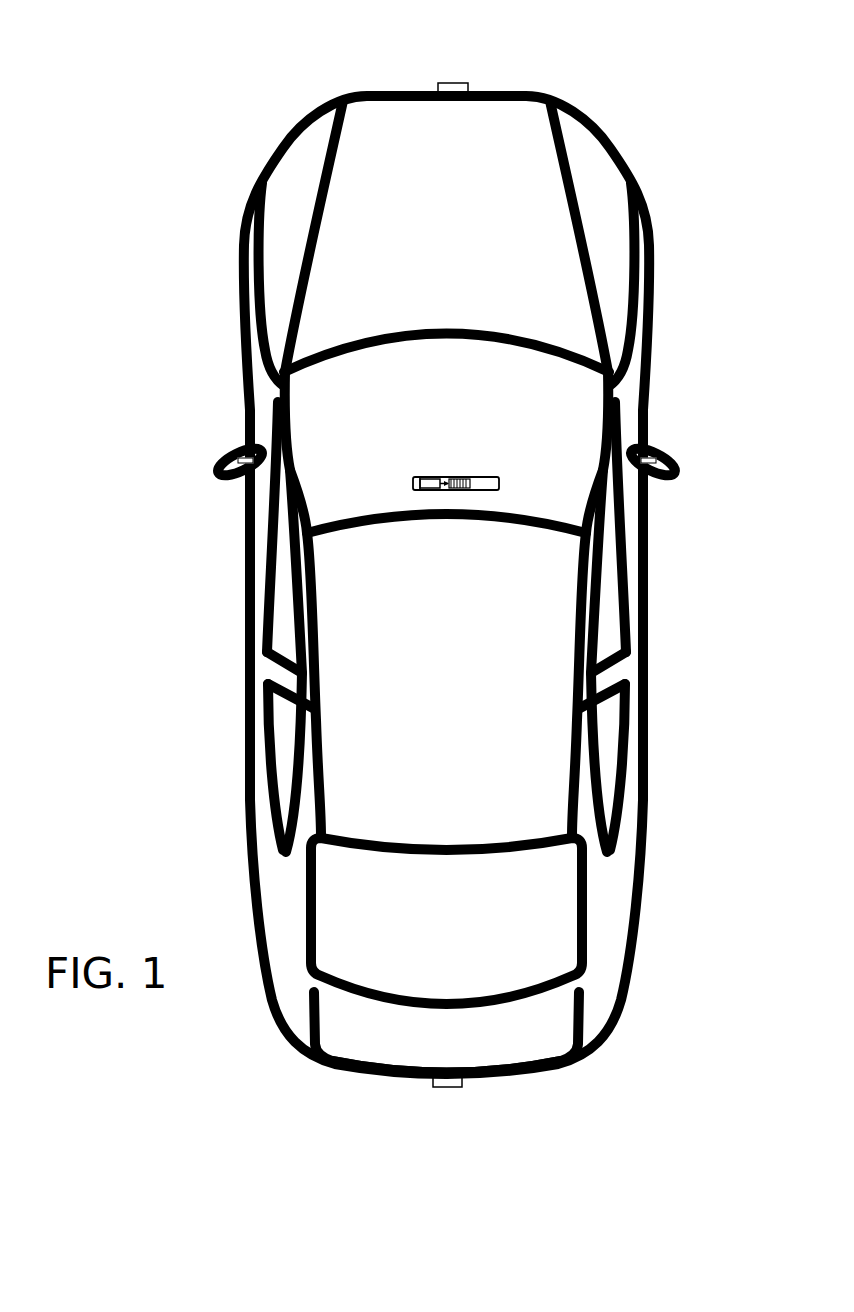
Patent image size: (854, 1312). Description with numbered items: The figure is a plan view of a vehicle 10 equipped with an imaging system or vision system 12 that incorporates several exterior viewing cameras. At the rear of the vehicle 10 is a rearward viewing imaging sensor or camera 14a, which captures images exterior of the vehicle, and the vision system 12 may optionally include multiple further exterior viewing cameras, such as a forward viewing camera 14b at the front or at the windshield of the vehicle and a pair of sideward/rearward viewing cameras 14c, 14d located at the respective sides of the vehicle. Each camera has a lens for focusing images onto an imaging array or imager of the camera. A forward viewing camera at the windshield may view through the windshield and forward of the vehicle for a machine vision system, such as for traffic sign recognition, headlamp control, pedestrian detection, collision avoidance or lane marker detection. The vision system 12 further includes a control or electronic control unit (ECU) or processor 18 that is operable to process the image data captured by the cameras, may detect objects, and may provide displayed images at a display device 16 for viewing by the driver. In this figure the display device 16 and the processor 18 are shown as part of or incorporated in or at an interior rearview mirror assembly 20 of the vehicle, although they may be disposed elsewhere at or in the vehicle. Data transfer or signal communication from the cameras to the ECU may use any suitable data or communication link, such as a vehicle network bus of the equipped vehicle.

The vehicle 10 is at (192, 183).
The vision system 12 is at (390, 1112).
The rearward viewing camera 14a is at (450, 1083).
The forward viewing camera 14b is at (456, 83).
The sideward/rearward viewing camera 14c is at (236, 455).
The sideward/rearward viewing camera 14d is at (655, 457).
The display device 16 is at (430, 479).
The electronic control unit 18 is at (450, 477).
The interior rearview mirror assembly 20 is at (498, 478).